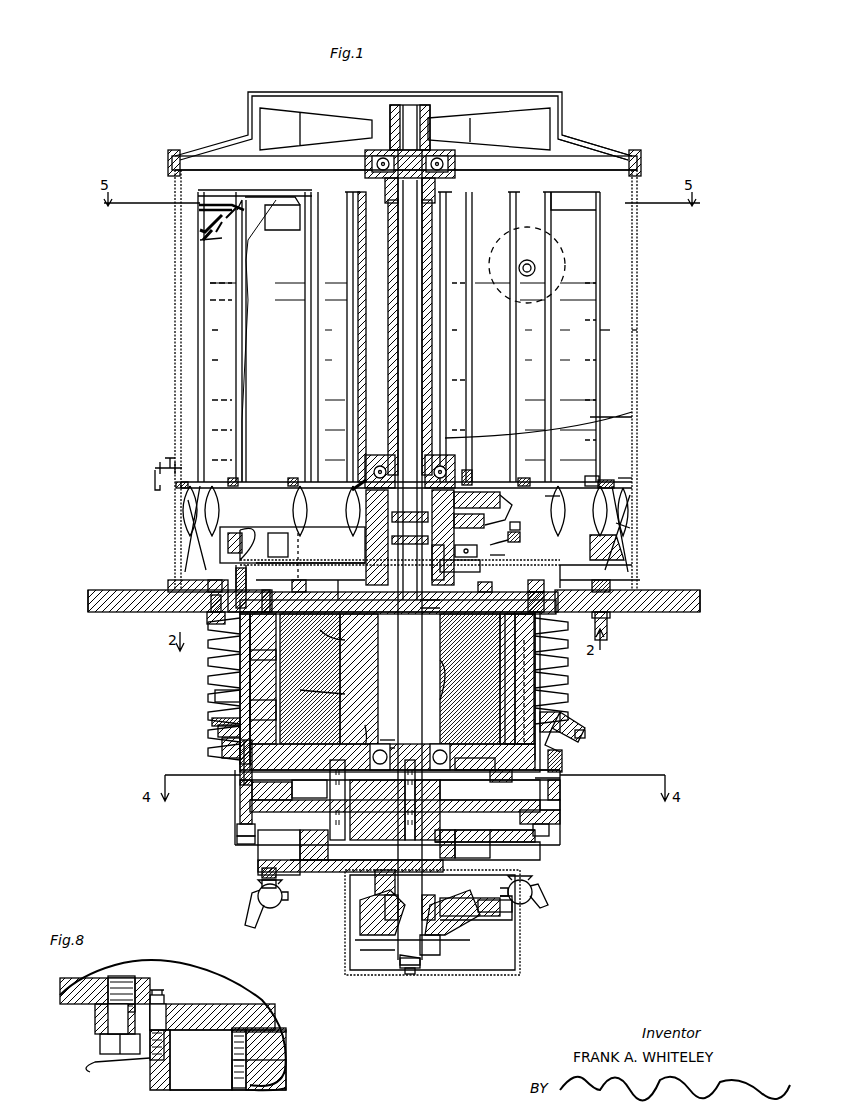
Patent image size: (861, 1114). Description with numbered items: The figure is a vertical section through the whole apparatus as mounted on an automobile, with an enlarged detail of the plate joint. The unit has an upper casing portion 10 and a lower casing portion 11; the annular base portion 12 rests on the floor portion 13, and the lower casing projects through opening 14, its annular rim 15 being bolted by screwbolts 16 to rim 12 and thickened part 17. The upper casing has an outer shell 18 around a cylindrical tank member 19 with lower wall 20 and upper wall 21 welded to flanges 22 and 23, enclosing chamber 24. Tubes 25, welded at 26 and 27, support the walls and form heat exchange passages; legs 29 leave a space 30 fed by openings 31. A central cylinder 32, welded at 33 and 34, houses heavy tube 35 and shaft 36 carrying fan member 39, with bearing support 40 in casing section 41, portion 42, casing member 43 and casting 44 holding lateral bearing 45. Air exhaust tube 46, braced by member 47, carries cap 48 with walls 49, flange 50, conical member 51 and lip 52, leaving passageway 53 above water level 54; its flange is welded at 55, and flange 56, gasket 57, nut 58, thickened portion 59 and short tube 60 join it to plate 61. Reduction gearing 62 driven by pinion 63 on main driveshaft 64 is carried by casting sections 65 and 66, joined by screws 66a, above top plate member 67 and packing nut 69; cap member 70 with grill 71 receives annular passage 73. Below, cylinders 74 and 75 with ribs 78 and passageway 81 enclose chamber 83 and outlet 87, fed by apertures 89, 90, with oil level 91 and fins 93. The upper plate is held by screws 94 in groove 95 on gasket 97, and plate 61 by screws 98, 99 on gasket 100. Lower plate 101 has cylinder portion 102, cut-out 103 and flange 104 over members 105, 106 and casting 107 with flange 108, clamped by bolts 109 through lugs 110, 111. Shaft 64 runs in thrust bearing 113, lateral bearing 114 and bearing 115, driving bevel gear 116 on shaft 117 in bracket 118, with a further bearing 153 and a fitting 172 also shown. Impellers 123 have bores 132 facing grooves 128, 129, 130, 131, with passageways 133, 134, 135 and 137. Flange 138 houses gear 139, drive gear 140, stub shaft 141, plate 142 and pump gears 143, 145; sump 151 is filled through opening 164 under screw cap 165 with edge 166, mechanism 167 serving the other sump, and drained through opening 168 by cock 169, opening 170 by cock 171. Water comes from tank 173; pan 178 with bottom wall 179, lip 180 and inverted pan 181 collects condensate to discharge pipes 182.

In FIG. 1, the upper casing portion 10 is at (646, 379).
In FIG. 1, the lower casing portion 11 is at (174, 686).
In FIG. 1, the annular base portion 12 is at (645, 590).
In FIG. 8, the annular base portion 12 is at (62, 996).
In FIG. 1, the floor portion 13 is at (684, 590).
In FIG. 1, the opening 14 is at (172, 582).
In FIG. 1, the annular rim 15 is at (214, 580).
In FIG. 1, the screwbolts 16 is at (208, 617).
In FIG. 1, the thickened part 17 is at (606, 622).
In FIG. 8, the thickened part 17 is at (100, 1044).
In FIG. 1, the outer shell 18 is at (636, 294).
In FIG. 1, the cylindrical tank member 19 is at (188, 330).
In FIG. 1, the lower wall 20 is at (592, 477).
In FIG. 1, the upper wall 21 is at (600, 202).
In FIG. 1, the horizontal flange 22 is at (620, 479).
In FIG. 1, the downturned flange member 23 is at (204, 197).
In FIG. 1, the chamber 24 is at (606, 330).
In FIG. 1, the tubes 25 is at (632, 418).
In FIG. 1, the weld 26 is at (555, 489).
In FIG. 1, the weld 27 is at (516, 193).
In FIG. 1, the legs 29 is at (181, 532).
In FIG. 1, the space or chamber 30 is at (616, 515).
In FIG. 1, the openings 31 is at (210, 512).
In FIG. 1, the larger tube or cylinder 32 is at (466, 360).
In FIG. 1, the weld 33 is at (353, 491).
In FIG. 1, the weld 34 is at (353, 193).
In FIG. 1, the heavy tube 35 is at (388, 318).
In FIG. 1, the shaft 36 is at (390, 244).
In FIG. 1, the fan member 39 is at (483, 118).
In FIG. 1, the bearing support 40 is at (426, 118).
In FIG. 1, the casing section 41 is at (440, 165).
In FIG. 1, the portion 42 is at (390, 198).
In FIG. 1, the casing member 43 is at (446, 466).
In FIG. 1, the casting 44 is at (366, 466).
In FIG. 1, the lateral bearing 45 is at (468, 470).
In FIG. 8, the lateral bearing 45 is at (96, 1020).
In FIG. 1, the air exhaust tube 46 is at (238, 403).
In FIG. 1, the brace member / flange 47 is at (256, 210).
In FIG. 1, the cap 48 is at (246, 198).
In FIG. 1, the semi-conical walls 49 is at (213, 216).
In FIG. 1, the internal annular flange 50 is at (212, 226).
In FIG. 1, the second conical member 51 is at (222, 230).
In FIG. 1, the annular horizontal lip 52 is at (214, 240).
In FIG. 1, the annular passageway 53 is at (208, 238).
In FIG. 1, the water level 54 is at (600, 280).
In FIG. 1, the weld 55 is at (232, 478).
In FIG. 1, the bottom annular flange 56 is at (228, 538).
In FIG. 1, the gasket 57 is at (246, 532).
In FIG. 1, the nut 58 is at (289, 545).
In FIG. 1, the thickened portion 59 is at (247, 578).
In FIG. 1, the short tube 60 is at (285, 582).
In FIG. 1, the plate 61 is at (346, 596).
In FIG. 8, the plate 61 is at (220, 1006).
In FIG. 1, the reduction gearing 62 is at (497, 492).
In FIG. 1, the pinion 63 is at (392, 524).
In FIG. 1, the main driveshaft 64 is at (386, 660).
In FIG. 1, the casting section 65 is at (504, 506).
In FIG. 1, the casting section 66 is at (506, 546).
In FIG. 1, the screws 66a is at (526, 551).
In FIG. 1, the top plate member 67 is at (458, 573).
In FIG. 1, the packing nut 69 is at (370, 548).
In FIG. 1, the cap member 70 is at (570, 150).
In FIG. 1, the top grill 71 is at (530, 97).
In FIG. 1, the annular passage 73 is at (636, 350).
In FIG. 1, the cylinder 74 is at (268, 686).
In FIG. 8, the cylinder 74 is at (232, 1074).
In FIG. 1, the cylinder 75 is at (216, 704).
In FIG. 1, the ribs 78 is at (216, 656).
In FIG. 1, the passageway 81 is at (262, 654).
In FIG. 1, the crescent-like chamber 83 is at (372, 675).
In FIG. 1, the air outlet passageway 87 is at (536, 592).
In FIG. 1, the aperture 89 is at (520, 692).
In FIG. 1, the aperture 90 is at (574, 682).
In FIG. 1, the oil level 91 is at (562, 762).
In FIG. 1, the circumferential fins 93 is at (214, 690).
In FIG. 8, the circumferential fins 93 is at (126, 1068).
In FIG. 1, the screws 94 is at (266, 612).
In FIG. 8, the screws 94 is at (232, 1046).
In FIG. 8, the annular groove 95 is at (287, 1052).
In FIG. 8, the annular gasket 97 is at (238, 1089).
In FIG. 1, the screws 98 is at (300, 590).
In FIG. 1, the screws 99 is at (236, 580).
In FIG. 8, the screws 99 is at (162, 998).
In FIG. 8, the gasket 100 is at (201, 1060).
In FIG. 1, the lower plate 101 is at (515, 782).
In FIG. 1, the upper cylinder portion 102 is at (365, 728).
In FIG. 1, the cut-out portion 103 is at (266, 706).
In FIG. 1, the annular horizontal flange 104 is at (562, 776).
In FIG. 1, the ring-like member 105 is at (562, 791).
In FIG. 1, the ring-like member 106 is at (562, 819).
In FIG. 1, the supporting casting 107 is at (415, 845).
In FIG. 1, the flange 108 is at (236, 838).
In FIG. 1, the screw bolts 109 is at (568, 833).
In FIG. 1, the lugs 110 is at (222, 746).
In FIG. 1, the lugs 111 is at (238, 800).
In FIG. 1, the thrust bearing 113 is at (384, 897).
In FIG. 1, the lateral bearing 114 is at (392, 580).
In FIG. 1, the lateral bearing / driving bevel gear 115 is at (392, 752).
In FIG. 1, the bevel gear 116 is at (465, 942).
In FIG. 1, the shaft 117 is at (482, 922).
In FIG. 1, the bracket 118 is at (512, 904).
In FIG. 1, the impellers 123 is at (518, 656).
In FIG. 1, the groove 128 is at (392, 716).
In FIG. 1, the groove 129 is at (392, 730).
In FIG. 1, the groove 130 is at (346, 640).
In FIG. 1, the groove 131 is at (442, 611).
In FIG. 1, the bores 132 is at (346, 694).
In FIG. 1, the passageway 133 is at (462, 782).
In FIG. 1, the passageway 134 is at (475, 764).
In FIG. 1, the passageway 135 is at (485, 592).
In FIG. 1, the passageway 137 is at (338, 592).
In FIG. 1, the annular flange 138 is at (455, 852).
In FIG. 1, the gear 139 is at (376, 878).
In FIG. 1, the drive gear 140 is at (305, 850).
In FIG. 1, the stub shaft 141 is at (328, 862).
In FIG. 1, the plate 142 is at (292, 804).
In FIG. 1, the first gear 143 is at (455, 842).
In FIG. 1, the first gear 145 is at (320, 800).
In FIG. 1, the high pressure oil sump 151 is at (560, 806).
In FIG. 1, the bearing 153 is at (410, 759).
In FIG. 1, the opening 164 is at (580, 752).
In FIG. 1, the screw cap 165 is at (585, 728).
In FIG. 1, the lower edge 166 is at (585, 735).
In FIG. 1, the mechanism 167 is at (212, 723).
In FIG. 1, the opening 168 is at (532, 860).
In FIG. 1, the hand operated cock 169 is at (534, 888).
In FIG. 1, the opening 170 is at (262, 872).
In FIG. 1, the hand operated cock 171 is at (265, 894).
In FIG. 1, the valve 172 is at (158, 468).
In FIG. 1, the tank 173 is at (526, 236).
In FIG. 1, the pan 178 is at (632, 567).
In FIG. 1, the bottom wall 179 is at (580, 568).
In FIG. 1, the annular upstanding lip 180 is at (478, 552).
In FIG. 1, the inverted pan 181 is at (524, 478).
In FIG. 1, the discharge pipes 182 is at (612, 613).